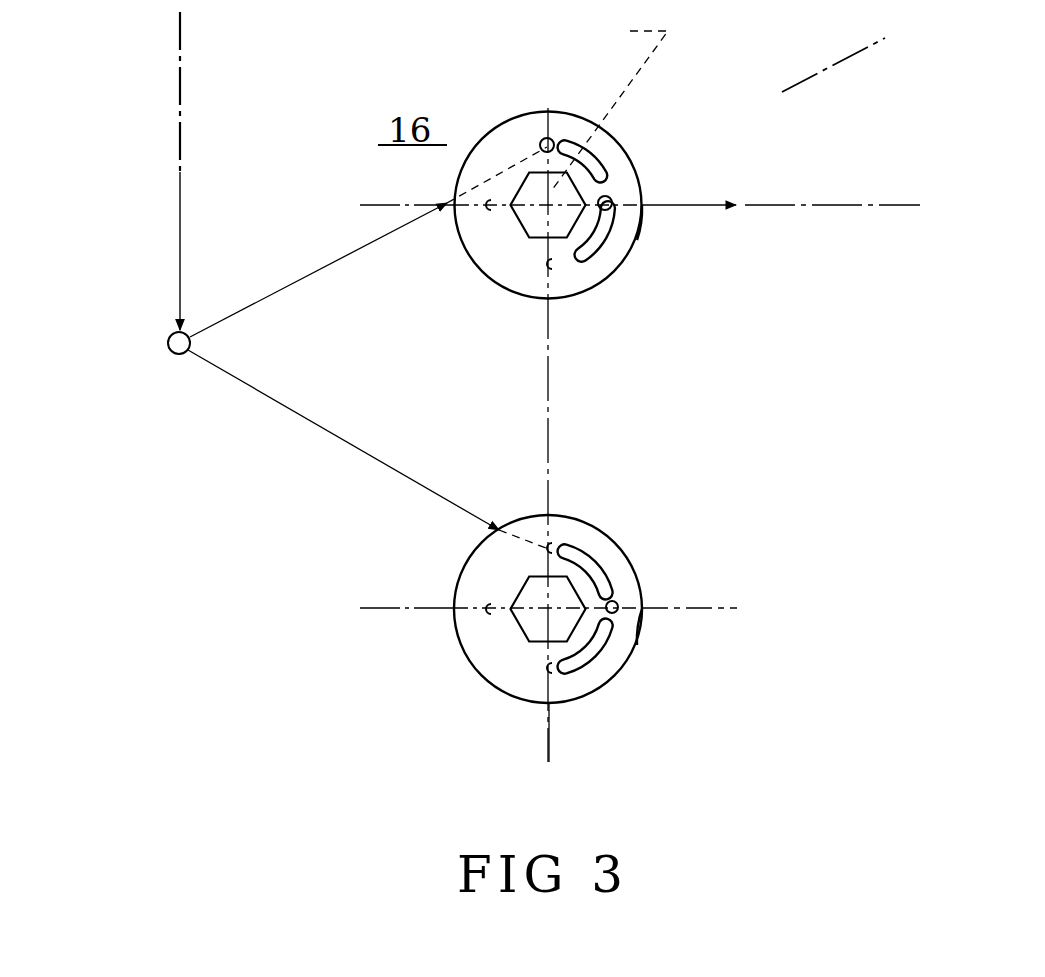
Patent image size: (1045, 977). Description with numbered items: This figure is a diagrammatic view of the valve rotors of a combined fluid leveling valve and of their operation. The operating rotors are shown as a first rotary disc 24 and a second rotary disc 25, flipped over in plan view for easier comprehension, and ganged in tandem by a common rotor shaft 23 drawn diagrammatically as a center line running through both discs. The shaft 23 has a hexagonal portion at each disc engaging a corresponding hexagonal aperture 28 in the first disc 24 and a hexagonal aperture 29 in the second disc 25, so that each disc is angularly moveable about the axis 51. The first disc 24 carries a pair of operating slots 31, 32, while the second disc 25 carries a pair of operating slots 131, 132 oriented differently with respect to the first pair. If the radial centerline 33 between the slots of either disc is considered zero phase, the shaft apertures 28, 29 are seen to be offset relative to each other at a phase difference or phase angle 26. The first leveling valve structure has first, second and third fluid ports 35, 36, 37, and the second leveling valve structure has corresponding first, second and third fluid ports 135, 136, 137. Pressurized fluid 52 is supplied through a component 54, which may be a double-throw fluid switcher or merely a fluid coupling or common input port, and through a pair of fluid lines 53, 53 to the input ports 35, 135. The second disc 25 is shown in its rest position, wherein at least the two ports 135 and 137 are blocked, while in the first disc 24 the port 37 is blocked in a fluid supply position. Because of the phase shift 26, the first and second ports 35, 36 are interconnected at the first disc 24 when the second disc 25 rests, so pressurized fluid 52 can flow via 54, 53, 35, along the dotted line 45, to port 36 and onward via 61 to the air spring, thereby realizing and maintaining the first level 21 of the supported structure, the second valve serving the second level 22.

The first level 21 is at (443, 205).
The second level 22 is at (437, 609).
The common shaft 23 is at (485, 435).
The first operating rotor 24 is at (720, 247).
The second operating rotor 25 is at (720, 649).
The phase difference 26 is at (873, 52).
The hexagonal aperture 28 is at (464, 256).
The hexagonal aperture 29 is at (468, 653).
The operating slot 31 is at (645, 124).
The operating slot 32 is at (689, 285).
The radial centerline 33 is at (604, 583).
The first fluid port 35 is at (471, 105).
The second fluid port 36 is at (700, 158).
The third fluid port 37 is at (578, 305).
The dotted line 45 is at (610, 104).
The axis 51 is at (503, 760).
The pressurized fluid 52 is at (123, 169).
The fluid line 53 is at (367, 347).
The double-throw fluid switcher 54 is at (117, 312).
The fluid path to air spring 61 is at (640, 179).
The operating slot 131 is at (688, 511).
The operating slot 132 is at (688, 697).
The first fluid port 135 is at (479, 527).
The second fluid port 136 is at (712, 561).
The third fluid port 137 is at (618, 738).